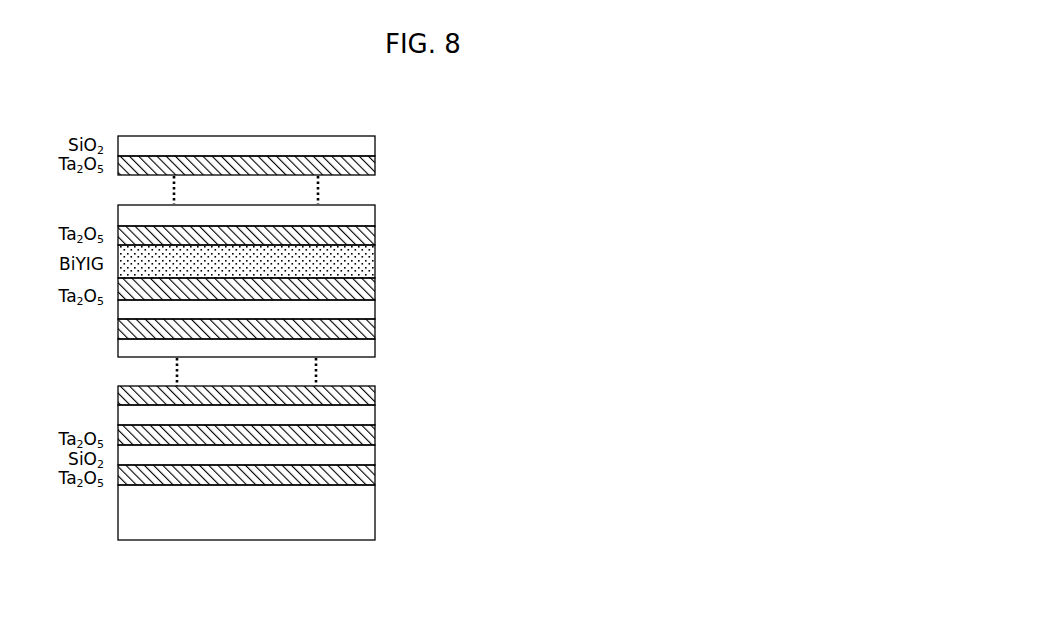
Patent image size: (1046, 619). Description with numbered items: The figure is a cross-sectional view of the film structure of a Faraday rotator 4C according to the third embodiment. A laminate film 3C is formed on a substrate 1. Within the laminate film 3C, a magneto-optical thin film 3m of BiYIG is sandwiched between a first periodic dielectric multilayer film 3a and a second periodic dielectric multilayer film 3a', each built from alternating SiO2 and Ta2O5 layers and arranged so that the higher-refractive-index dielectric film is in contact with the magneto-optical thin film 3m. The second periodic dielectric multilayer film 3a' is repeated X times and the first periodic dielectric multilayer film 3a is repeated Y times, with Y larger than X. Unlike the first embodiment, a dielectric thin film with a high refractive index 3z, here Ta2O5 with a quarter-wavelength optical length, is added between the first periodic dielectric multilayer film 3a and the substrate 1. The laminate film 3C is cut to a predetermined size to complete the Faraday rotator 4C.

The substrate 1 is at (375, 512).
The second periodic dielectric multilayer film 3a' is at (431, 190).
The magneto-optical thin film 3m is at (375, 263).
The first periodic dielectric multilayer film 3a is at (415, 371).
The dielectric thin film with a high refractive index 3z is at (375, 477).
The laminate film 3C is at (470, 313).
The Faraday rotator 4C is at (495, 338).